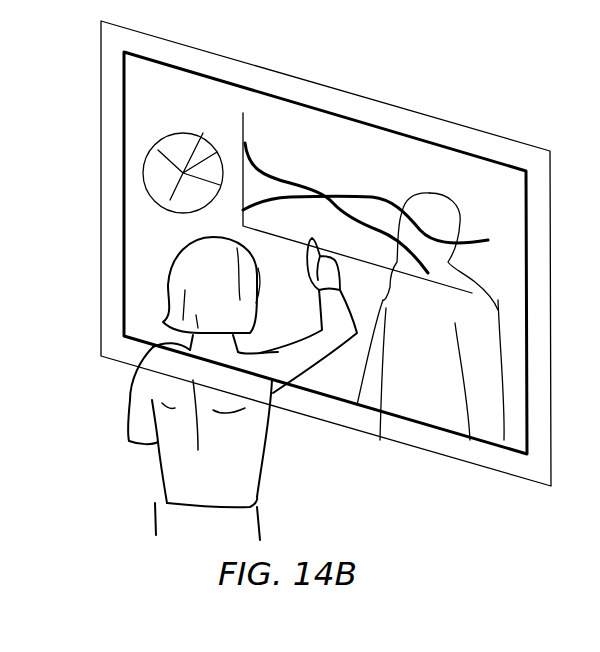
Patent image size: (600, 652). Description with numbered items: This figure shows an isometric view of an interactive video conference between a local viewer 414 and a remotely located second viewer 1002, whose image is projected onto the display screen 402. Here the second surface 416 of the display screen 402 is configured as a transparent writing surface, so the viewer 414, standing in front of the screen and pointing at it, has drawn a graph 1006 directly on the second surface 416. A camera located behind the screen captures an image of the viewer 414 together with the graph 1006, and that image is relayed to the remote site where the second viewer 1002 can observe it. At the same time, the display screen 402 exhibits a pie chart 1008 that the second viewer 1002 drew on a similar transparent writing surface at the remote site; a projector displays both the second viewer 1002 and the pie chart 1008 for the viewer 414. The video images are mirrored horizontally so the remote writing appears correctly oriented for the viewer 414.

The display screen 402 is at (140, 281).
The second surface 416 is at (203, 113).
The pie chart 1008 is at (152, 217).
The graph 1006 is at (277, 156).
The second viewer 1002 is at (428, 412).
The viewer 414 is at (173, 460).